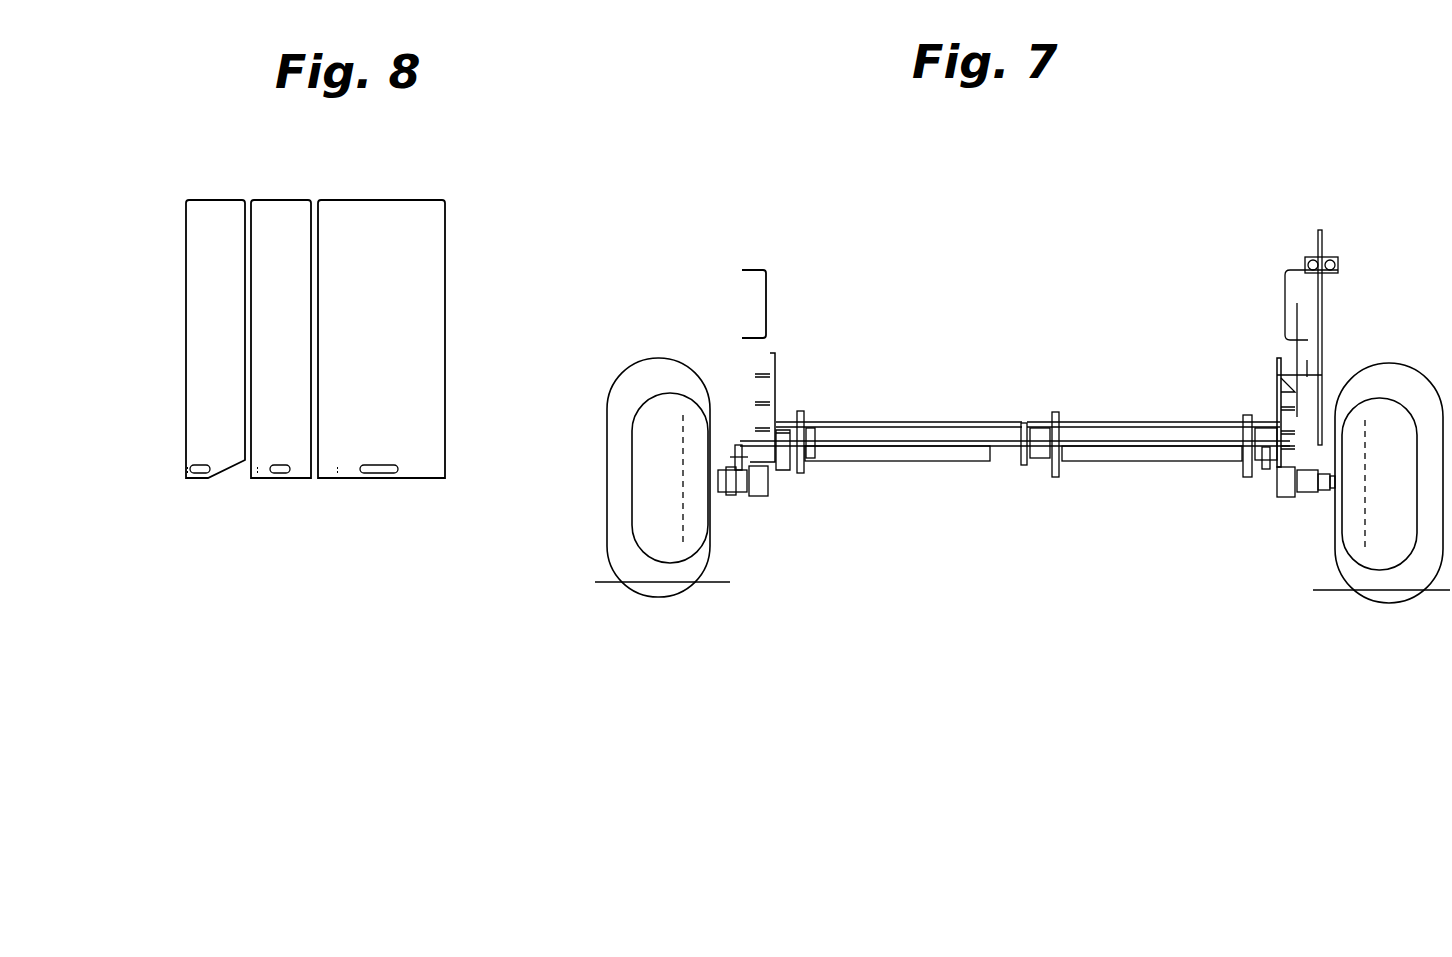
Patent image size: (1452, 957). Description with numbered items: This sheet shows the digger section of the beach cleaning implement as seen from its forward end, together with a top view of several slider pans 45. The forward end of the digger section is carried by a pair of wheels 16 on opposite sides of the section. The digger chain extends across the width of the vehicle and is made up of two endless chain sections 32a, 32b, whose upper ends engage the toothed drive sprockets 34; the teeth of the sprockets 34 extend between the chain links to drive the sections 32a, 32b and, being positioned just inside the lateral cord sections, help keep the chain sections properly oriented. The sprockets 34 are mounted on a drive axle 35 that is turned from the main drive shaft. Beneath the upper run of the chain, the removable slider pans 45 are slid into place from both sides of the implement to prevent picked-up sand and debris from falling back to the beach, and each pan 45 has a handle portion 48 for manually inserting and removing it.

In FIG. 7, the wheels 16 is at (690, 565).
In FIG. 7, the digger chain section 32a is at (945, 420).
In FIG. 7, the digger chain section 32b is at (1175, 423).
In FIG. 7, the drive sprockets 34 is at (800, 412).
In FIG. 7, the drive axle 35 is at (1037, 465).
In FIG. 8, the slider pans 45 is at (288, 215).
In FIG. 7, the slider pans 45 is at (848, 445).
In FIG. 8, the handle portions 48 is at (285, 462).